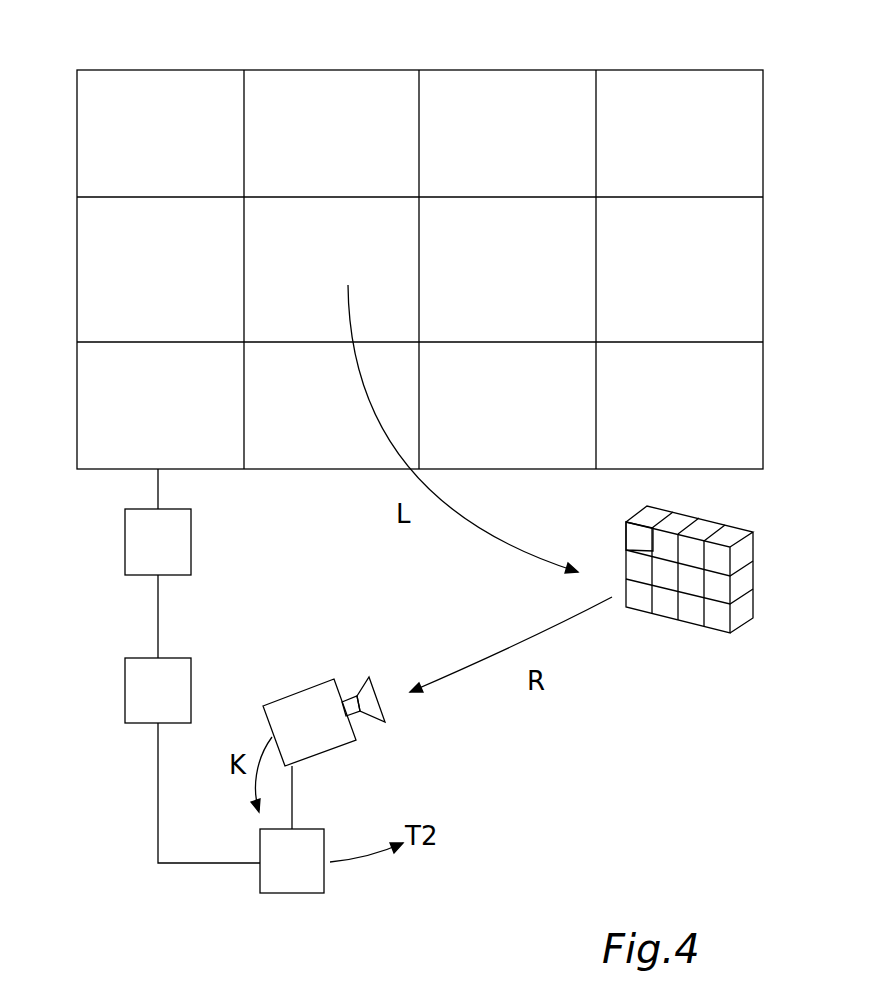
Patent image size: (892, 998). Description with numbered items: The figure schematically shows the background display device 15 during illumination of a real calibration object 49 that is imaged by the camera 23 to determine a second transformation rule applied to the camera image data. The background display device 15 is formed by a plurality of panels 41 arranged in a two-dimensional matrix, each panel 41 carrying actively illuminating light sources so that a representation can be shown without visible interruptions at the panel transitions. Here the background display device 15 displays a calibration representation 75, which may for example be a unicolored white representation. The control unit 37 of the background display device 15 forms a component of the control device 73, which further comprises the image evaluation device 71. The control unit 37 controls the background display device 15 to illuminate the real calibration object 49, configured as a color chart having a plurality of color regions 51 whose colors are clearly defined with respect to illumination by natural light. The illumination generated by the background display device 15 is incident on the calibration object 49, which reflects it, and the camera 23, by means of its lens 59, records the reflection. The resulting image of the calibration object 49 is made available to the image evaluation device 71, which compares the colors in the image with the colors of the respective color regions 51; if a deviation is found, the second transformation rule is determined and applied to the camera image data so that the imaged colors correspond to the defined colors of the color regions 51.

The panel 41 is at (185, 87).
The calibration representation 75 is at (721, 305).
The background display device 15 is at (109, 501).
The control unit 37 is at (158, 542).
The control device 73 is at (158, 690).
The image evaluation device 71 is at (292, 829).
The camera 23 is at (302, 703).
The lens 59 is at (373, 697).
The real calibration object 49 is at (718, 646).
The color region 51 is at (735, 535).